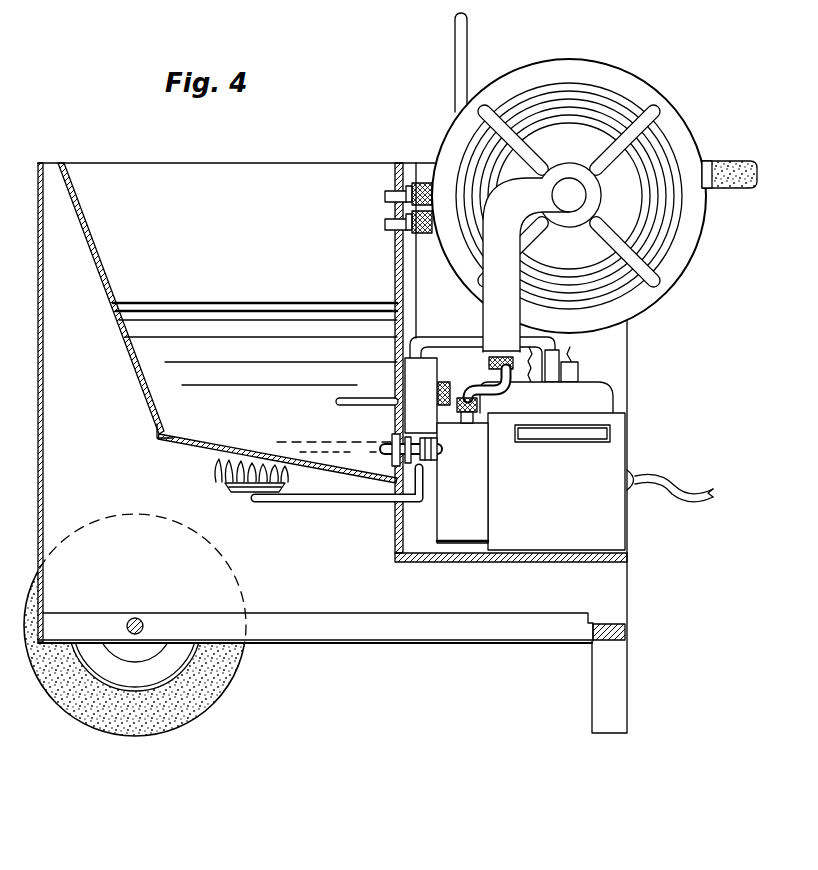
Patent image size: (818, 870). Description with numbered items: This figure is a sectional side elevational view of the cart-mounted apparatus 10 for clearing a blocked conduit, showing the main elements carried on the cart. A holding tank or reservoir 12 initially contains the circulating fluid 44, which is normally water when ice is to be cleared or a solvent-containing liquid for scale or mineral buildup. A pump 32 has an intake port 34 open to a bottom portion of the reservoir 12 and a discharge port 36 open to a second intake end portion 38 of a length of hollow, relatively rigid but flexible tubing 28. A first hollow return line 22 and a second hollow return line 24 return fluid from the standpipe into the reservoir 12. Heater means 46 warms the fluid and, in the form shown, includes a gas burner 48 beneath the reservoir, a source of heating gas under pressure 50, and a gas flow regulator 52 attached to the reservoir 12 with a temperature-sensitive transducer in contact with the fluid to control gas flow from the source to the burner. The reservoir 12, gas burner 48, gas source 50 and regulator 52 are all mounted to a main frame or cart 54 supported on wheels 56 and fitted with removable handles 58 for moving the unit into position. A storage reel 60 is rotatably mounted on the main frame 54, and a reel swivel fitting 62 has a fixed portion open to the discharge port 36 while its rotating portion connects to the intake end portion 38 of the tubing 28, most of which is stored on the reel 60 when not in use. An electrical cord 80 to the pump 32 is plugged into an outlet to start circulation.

The apparatus 10 is at (453, 660).
The holding tank or reservoir 12 is at (182, 175).
The first hollow return line 22 is at (434, 234).
The second hollow return line 24 is at (416, 163).
The flexible tubing 28 is at (464, 15).
The pump 32 is at (463, 524).
The intake port 34 is at (432, 452).
The discharge port 36 is at (480, 411).
The second intake end portion 38 is at (470, 397).
The circulating fluid 44 is at (163, 387).
The heater means 46 is at (312, 511).
The gas burner 48 is at (225, 487).
The source of heating gas under pressure 50 is at (596, 395).
The gas flow regulator 52 is at (421, 378).
The main frame or cart 54 is at (272, 627).
The wheels 56 is at (183, 697).
The removable handles 58 is at (720, 162).
The storage reel 60 is at (548, 66).
The reel swivel fitting 62 is at (532, 190).
The electrical cord 80 is at (670, 495).